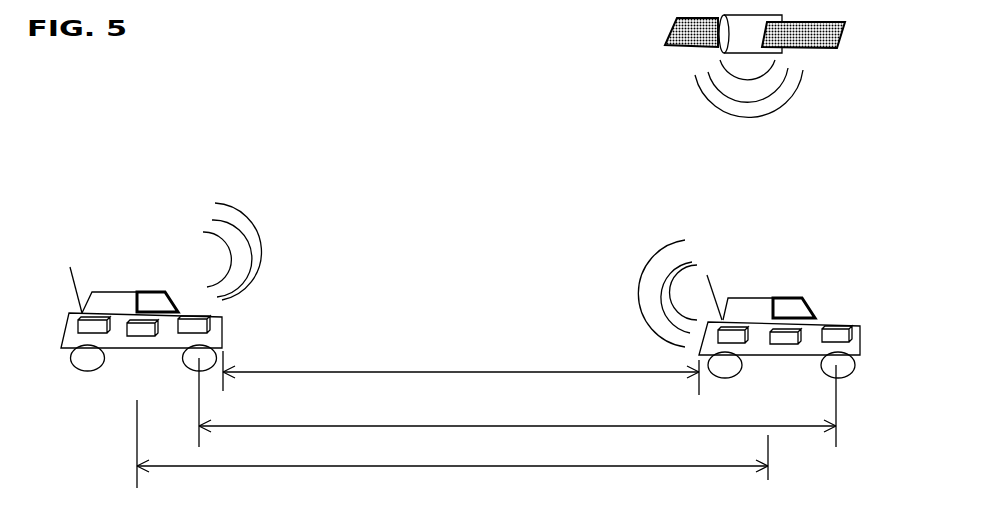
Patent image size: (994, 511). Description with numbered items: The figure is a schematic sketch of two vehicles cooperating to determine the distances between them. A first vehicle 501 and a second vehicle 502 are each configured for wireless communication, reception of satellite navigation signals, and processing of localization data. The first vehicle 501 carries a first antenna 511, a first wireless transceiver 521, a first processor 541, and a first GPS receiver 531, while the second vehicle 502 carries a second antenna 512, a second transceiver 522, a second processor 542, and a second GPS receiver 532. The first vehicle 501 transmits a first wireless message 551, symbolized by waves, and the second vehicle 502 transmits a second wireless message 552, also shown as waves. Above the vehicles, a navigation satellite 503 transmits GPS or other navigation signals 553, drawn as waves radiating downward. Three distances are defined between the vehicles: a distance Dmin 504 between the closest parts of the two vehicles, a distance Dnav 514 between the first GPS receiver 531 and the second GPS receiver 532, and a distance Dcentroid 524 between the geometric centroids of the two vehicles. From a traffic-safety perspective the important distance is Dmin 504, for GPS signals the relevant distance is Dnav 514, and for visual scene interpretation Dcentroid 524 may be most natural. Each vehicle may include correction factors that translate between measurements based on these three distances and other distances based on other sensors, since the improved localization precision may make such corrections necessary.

The first vehicle 501 is at (152, 291).
The first antenna 511 is at (73, 283).
The first wireless transceiver 521 is at (90, 333).
The first GPS receiver 531 is at (192, 335).
The first processor 541 is at (140, 337).
The first wireless message 551 is at (268, 264).
The second vehicle 502 is at (785, 298).
The second antenna 512 is at (716, 293).
The second transceiver 522 is at (730, 343).
The second GPS receiver 532 is at (823, 345).
The second processor 542 is at (780, 345).
The second wireless message 552 is at (635, 289).
The navigation satellite 503 is at (782, 50).
The GPS signals 553 is at (797, 97).
The distance Dmin 504 is at (352, 372).
The distance Dnav 514 is at (350, 426).
The distance Dcentroid 524 is at (355, 467).